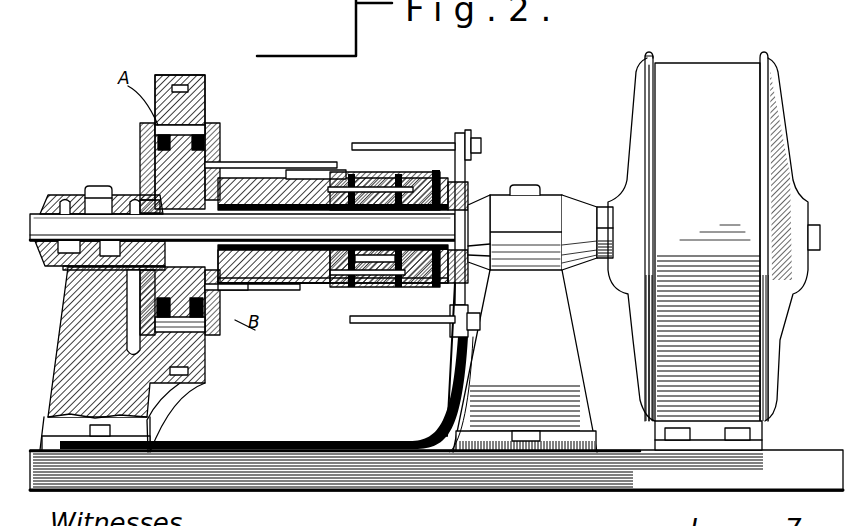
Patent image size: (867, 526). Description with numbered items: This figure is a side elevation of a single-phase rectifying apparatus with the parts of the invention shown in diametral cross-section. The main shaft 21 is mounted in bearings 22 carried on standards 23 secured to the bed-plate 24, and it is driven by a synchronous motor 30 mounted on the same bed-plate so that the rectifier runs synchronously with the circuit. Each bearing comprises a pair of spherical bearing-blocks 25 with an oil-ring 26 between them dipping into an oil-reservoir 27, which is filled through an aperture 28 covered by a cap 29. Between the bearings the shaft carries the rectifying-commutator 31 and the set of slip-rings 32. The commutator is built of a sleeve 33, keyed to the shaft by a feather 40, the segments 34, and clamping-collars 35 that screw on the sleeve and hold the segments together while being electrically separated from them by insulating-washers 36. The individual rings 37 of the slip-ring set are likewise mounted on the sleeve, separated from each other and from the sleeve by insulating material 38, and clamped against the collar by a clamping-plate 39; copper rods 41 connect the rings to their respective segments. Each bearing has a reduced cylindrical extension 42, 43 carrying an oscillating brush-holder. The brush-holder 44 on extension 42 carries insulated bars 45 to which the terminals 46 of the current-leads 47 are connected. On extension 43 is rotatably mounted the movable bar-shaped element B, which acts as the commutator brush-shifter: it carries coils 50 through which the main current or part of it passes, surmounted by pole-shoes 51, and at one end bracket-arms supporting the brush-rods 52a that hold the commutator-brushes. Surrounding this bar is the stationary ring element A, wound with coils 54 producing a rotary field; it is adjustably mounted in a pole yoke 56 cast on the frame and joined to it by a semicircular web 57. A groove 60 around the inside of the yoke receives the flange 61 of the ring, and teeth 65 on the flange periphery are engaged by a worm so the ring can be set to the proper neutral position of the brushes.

The main shaft 21 is at (605, 226).
The bearings 22 is at (58, 205).
The standards 23 is at (78, 345).
The bed-plate 24 is at (393, 462).
The spherical bearing-blocks 25 is at (70, 212).
The oil-ring 26 is at (85, 293).
The oil-reservoir 27 is at (75, 270).
The aperture 28 is at (92, 186).
The cap 29 is at (100, 195).
The synchronous motor 30 is at (714, 251).
The rectifying-commutator 31 is at (275, 285).
The set of slip-rings 32 is at (437, 165).
The sleeve 33 is at (320, 285).
The segments 34 is at (280, 200).
The clamping-collars 35 is at (295, 178).
The insulating-washers 36 is at (262, 162).
The rings 37 is at (436, 172).
The insulating material 38 is at (395, 290).
The clamping-plate 39 is at (466, 132).
The feather 40 is at (262, 300).
The copper rods 41 is at (360, 187).
The reduced cylindrical extension 42 is at (488, 200).
The reduced cylindrical extension 43 is at (135, 195).
The brush-holder 44 is at (470, 280).
The insulated bars 45 is at (400, 143).
The terminals 46 is at (478, 138).
The current-leads 47 is at (440, 405).
The coils 50 is at (220, 150).
The pole-shoes 51 is at (204, 140).
The brush-rods 52a is at (310, 170).
The coils 54 is at (140, 140).
The pole yoke 56 is at (205, 82).
The semicircular web 57 is at (170, 387).
The groove 60 is at (165, 75).
The flange 61 is at (205, 125).
The teeth 65 is at (185, 85).